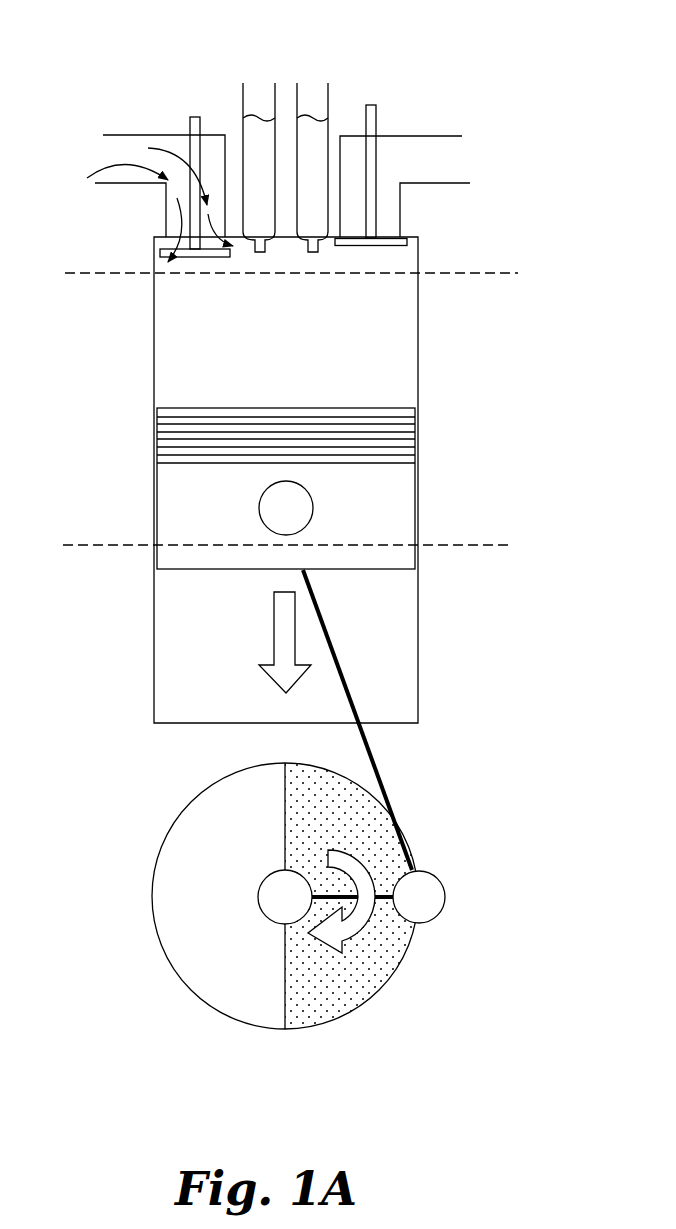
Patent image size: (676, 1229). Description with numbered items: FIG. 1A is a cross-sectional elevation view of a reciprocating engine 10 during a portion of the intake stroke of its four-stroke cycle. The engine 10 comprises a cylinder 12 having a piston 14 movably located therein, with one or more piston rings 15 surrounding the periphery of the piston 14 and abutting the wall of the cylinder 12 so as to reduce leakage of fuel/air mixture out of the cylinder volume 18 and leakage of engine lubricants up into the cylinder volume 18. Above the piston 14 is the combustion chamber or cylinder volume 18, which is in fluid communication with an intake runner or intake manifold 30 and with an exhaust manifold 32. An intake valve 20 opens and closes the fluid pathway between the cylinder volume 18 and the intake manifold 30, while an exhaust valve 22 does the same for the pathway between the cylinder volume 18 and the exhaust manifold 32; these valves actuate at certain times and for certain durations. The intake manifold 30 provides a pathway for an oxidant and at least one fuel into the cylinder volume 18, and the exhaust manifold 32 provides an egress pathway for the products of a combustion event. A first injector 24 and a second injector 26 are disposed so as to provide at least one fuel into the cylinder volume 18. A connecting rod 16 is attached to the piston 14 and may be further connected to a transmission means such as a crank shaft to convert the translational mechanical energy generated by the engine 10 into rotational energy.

The engine 10 is at (108, 98).
The cylinder 12 is at (142, 397).
The piston 14 is at (198, 520).
The piston rings 15 is at (148, 453).
The connecting rod 16 is at (372, 762).
The cylinder volume 18 is at (273, 357).
The intake valve 20 is at (180, 257).
The exhaust valve 22 is at (378, 247).
The first injector 24 is at (244, 116).
The second injector 26 is at (330, 103).
The intake manifold 30 is at (158, 165).
The exhaust manifold 32 is at (433, 160).